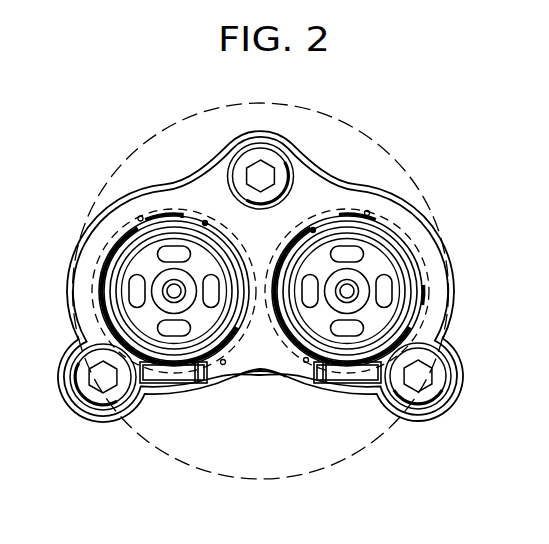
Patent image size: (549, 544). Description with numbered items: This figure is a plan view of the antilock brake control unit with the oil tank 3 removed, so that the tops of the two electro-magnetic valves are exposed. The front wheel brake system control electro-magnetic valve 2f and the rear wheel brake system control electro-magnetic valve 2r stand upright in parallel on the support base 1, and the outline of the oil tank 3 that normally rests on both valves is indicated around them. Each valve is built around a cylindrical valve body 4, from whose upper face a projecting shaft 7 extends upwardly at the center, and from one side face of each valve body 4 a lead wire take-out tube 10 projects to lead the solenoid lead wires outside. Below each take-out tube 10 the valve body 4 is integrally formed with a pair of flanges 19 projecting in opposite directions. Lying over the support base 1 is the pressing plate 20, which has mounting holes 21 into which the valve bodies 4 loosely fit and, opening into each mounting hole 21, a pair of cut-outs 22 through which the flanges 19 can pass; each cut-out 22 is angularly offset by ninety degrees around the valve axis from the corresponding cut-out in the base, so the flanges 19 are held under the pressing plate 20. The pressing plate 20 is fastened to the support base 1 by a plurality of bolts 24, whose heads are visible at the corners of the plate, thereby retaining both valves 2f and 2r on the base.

The support base 1 is at (273, 381).
The rear wheel brake system control electro-magnetic valve 2r is at (120, 236).
The front wheel brake system control electro-magnetic valve 2f is at (406, 238).
The oil tank 3 is at (397, 140).
The valve body 4 is at (175, 212).
The projecting shaft 7 is at (153, 291).
The lead wire take-out tube 10 is at (178, 380).
The flange 19 is at (80, 328).
The pressing plate 20 is at (249, 364).
The mounting hole 21 is at (205, 222).
The cut-out 22 is at (141, 216).
The bolt 24 is at (278, 160).